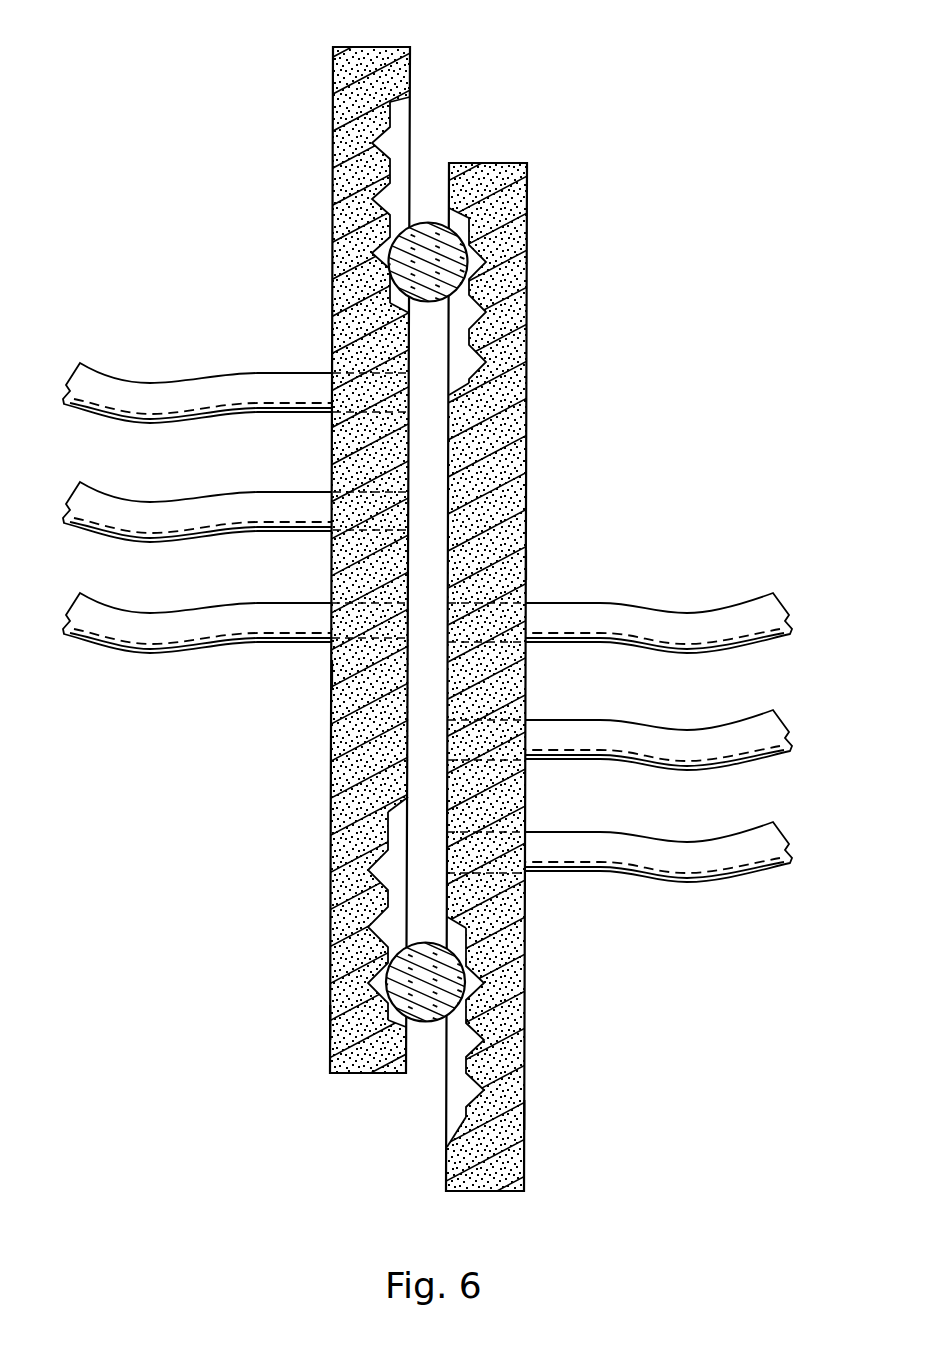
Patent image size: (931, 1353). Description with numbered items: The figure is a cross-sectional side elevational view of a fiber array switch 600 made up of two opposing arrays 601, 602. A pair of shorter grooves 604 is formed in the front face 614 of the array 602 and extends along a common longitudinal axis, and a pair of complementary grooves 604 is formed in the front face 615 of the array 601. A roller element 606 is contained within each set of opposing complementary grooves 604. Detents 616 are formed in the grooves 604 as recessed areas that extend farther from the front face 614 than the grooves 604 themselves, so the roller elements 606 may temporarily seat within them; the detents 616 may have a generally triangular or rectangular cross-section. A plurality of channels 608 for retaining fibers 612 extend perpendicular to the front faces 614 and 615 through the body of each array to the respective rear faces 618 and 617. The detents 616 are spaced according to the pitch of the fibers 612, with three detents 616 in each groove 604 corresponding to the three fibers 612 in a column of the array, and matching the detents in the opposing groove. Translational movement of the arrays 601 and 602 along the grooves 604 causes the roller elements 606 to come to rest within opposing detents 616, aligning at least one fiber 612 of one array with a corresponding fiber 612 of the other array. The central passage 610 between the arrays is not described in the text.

The fiber array switch 600 is at (636, 101).
The array 601 is at (527, 1050).
The array 602 is at (333, 78).
The grooves 604 is at (405, 106).
The roller element 606 is at (428, 220).
The channels 608 is at (530, 563).
The central channel 610 is at (420, 180).
The fibers 612 is at (213, 374).
The front face 614 is at (410, 48).
The front face 615 is at (447, 1182).
The detents 616 is at (373, 141).
The rear face 617 is at (527, 1113).
The rear face 618 is at (330, 1021).